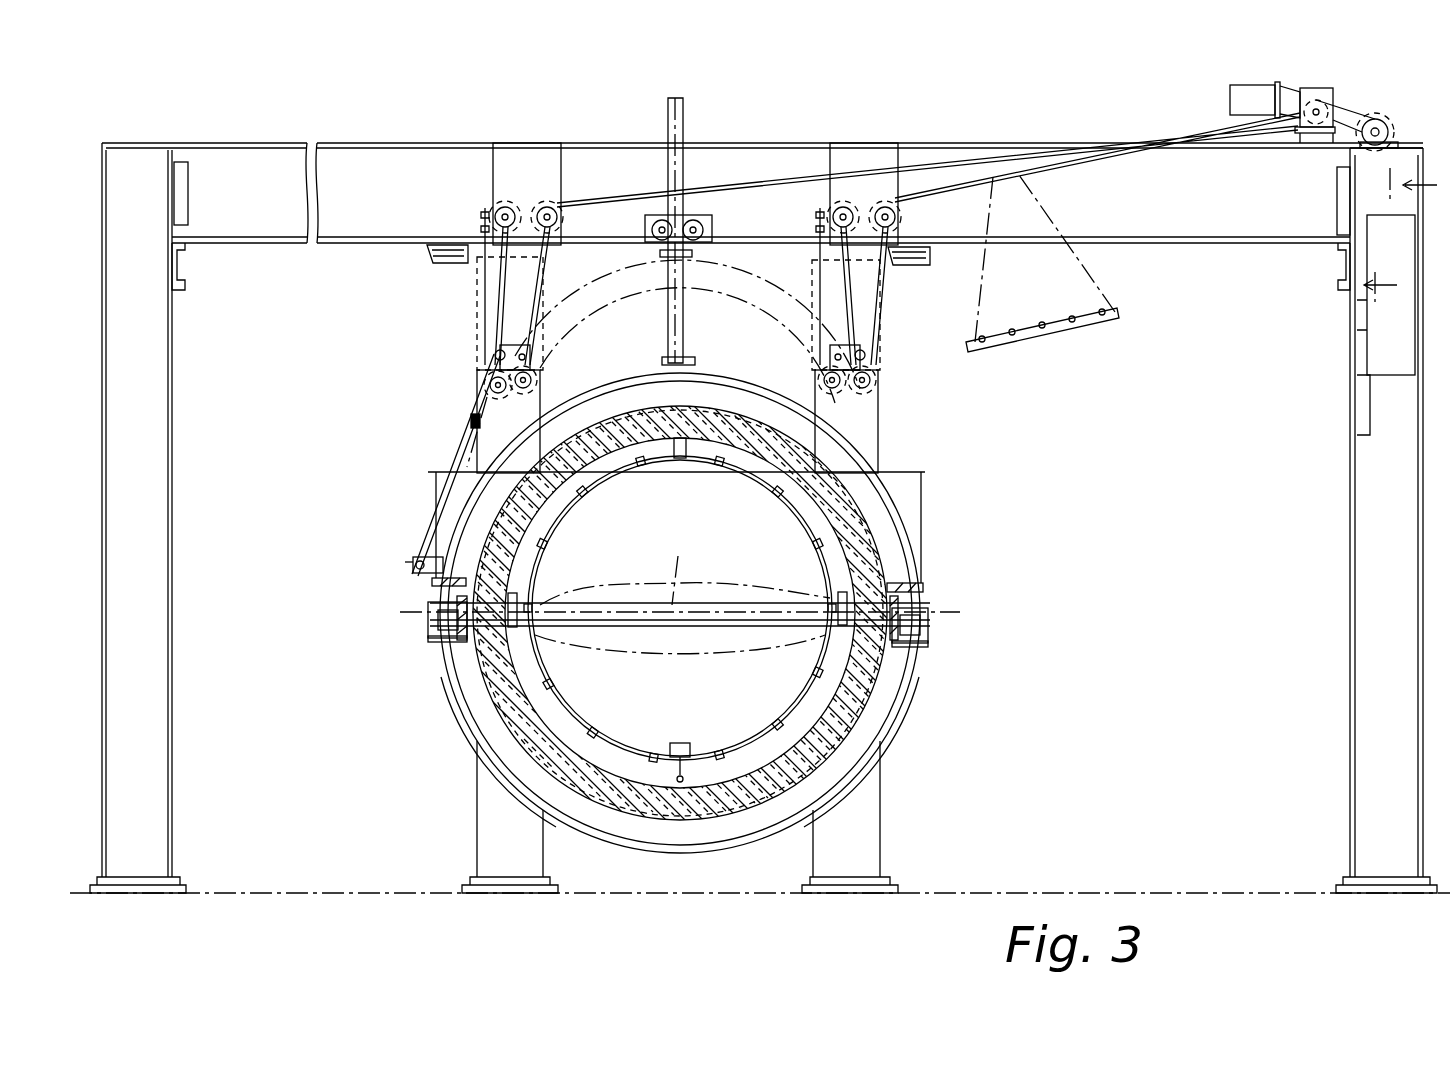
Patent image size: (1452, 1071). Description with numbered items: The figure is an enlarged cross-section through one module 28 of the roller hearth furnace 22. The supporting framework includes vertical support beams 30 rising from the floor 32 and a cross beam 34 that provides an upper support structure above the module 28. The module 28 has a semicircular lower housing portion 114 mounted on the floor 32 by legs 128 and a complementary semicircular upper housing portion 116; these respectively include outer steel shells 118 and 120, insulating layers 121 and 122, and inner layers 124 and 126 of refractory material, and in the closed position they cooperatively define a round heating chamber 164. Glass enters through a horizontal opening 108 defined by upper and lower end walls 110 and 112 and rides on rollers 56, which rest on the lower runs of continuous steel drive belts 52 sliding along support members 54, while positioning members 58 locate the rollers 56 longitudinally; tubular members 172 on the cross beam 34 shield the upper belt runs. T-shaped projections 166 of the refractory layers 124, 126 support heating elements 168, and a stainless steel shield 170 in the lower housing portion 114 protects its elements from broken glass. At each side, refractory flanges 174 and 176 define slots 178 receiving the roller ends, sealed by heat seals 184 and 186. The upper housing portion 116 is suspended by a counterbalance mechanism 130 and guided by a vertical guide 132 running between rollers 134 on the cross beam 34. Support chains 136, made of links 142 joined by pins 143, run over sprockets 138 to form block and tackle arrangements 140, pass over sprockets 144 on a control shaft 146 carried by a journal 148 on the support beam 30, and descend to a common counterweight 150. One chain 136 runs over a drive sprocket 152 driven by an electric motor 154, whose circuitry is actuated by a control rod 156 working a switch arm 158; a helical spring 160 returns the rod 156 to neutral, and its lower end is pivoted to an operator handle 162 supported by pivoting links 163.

The roller hearth furnace 22 is at (333, 121).
The furnace module 28 is at (348, 389).
The vertical support beam 30 is at (173, 465).
The floor 32 is at (315, 893).
The cross beam 34 is at (440, 143).
The drive belt 52 is at (450, 245).
The support member 54 is at (432, 636).
The roller 56 is at (560, 602).
The positioning member 58 is at (430, 620).
The horizontal opening 108 is at (740, 590).
The upper end wall 110 is at (715, 568).
The lower end wall 112 is at (672, 650).
The lower housing portion 114 is at (906, 720).
The upper housing portion 116 is at (929, 527).
The outer steel shell 118 is at (880, 748).
The outer steel shell 120 is at (878, 497).
The insulating layer 121 is at (695, 822).
The insulating layer 122 is at (875, 515).
The inner layer of refractory material 124 is at (760, 790).
The inner layer of refractory material 126 is at (712, 435).
The leg 128 is at (480, 838).
The counterbalance mechanism 130 is at (454, 309).
The vertical guide 132 is at (683, 125).
The roller 134 is at (695, 220).
The support chain 136 is at (940, 198).
The sprocket 138 is at (545, 212).
The block and tackle arrangement 140 is at (469, 318).
The link 142 is at (1010, 335).
The pin 143 is at (1030, 346).
The sprocket 144 is at (1382, 116).
The control shaft 146 is at (1382, 136).
The journal 148 is at (1370, 148).
The counterweight 150 is at (1367, 370).
The drive sprocket 152 is at (1325, 110).
The electric motor 154 is at (1230, 95).
The control rod 156 is at (450, 447).
The switch arm 158 is at (497, 350).
The helical spring 160 is at (473, 422).
The operator handle 162 is at (420, 575).
The pivoting link 163 is at (420, 560).
The heating chamber 164 is at (650, 752).
The projection 166 is at (640, 468).
The heating element 168 is at (722, 468).
The stainless steel shield 170 is at (770, 760).
The tubular member 172 is at (430, 258).
The flange 174 is at (470, 652).
The flange 176 is at (445, 530).
The slot 178 is at (465, 640).
The heat seal 184 is at (750, 642).
The heat seal 186 is at (805, 598).